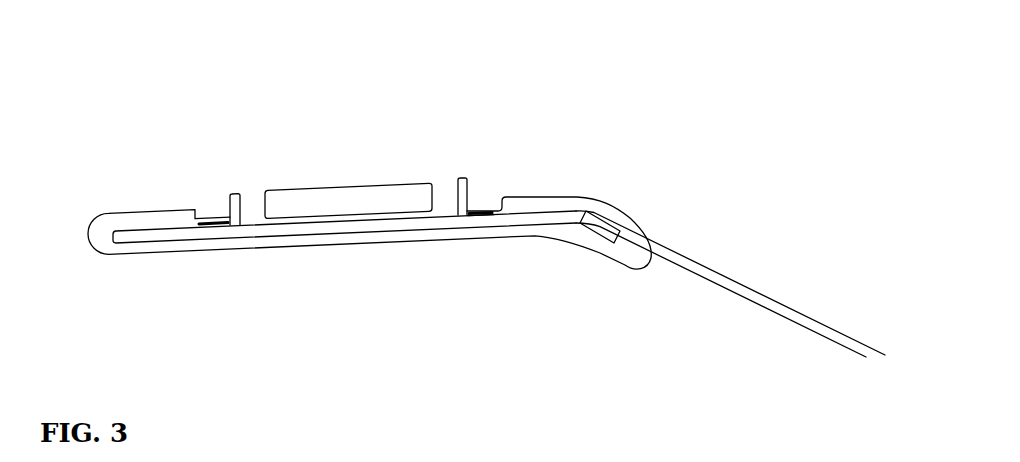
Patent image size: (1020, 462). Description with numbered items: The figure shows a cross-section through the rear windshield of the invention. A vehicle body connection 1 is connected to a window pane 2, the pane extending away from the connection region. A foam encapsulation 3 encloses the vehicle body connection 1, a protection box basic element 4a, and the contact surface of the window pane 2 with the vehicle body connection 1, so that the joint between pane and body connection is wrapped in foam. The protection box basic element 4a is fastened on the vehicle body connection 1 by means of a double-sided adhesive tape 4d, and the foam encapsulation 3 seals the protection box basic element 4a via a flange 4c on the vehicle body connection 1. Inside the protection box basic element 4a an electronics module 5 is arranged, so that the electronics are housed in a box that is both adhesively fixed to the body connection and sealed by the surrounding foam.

The vehicle body connection 1 is at (220, 244).
The window pane 2 is at (789, 298).
The foam encapsulation 3 is at (605, 192).
The protection box basic element 4a is at (240, 184).
The flange 4c is at (211, 208).
The double-sided adhesive tape 4d is at (480, 226).
The electronics module 5 is at (358, 177).